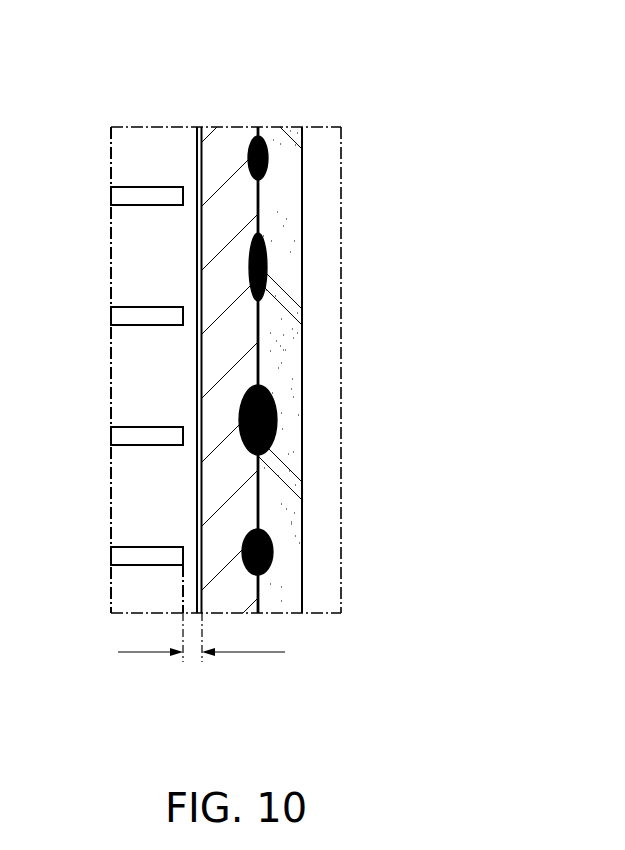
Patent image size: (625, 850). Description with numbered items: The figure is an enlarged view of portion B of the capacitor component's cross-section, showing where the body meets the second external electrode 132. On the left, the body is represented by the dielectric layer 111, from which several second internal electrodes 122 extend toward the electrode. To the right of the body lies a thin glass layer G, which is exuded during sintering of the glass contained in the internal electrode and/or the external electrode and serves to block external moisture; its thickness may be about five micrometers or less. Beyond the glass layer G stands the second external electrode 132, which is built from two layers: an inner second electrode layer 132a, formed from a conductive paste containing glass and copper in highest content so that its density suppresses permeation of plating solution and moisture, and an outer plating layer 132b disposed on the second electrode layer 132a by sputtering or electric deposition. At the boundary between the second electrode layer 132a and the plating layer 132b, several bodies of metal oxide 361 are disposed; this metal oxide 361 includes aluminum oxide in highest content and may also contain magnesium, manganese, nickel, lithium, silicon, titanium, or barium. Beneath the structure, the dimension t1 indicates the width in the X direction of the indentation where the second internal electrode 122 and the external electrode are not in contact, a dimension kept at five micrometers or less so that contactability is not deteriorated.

The dielectric layer 111 is at (133, 255).
The second internal electrode 122 is at (149, 193).
The glass layer G is at (199, 127).
The portion B is at (229, 24).
The second external electrode 132 is at (347, 370).
The second electrode layer 132a is at (238, 367).
The plating layer 132b is at (278, 488).
The metal oxide 361 is at (273, 550).
The dimension t1 is at (243, 637).